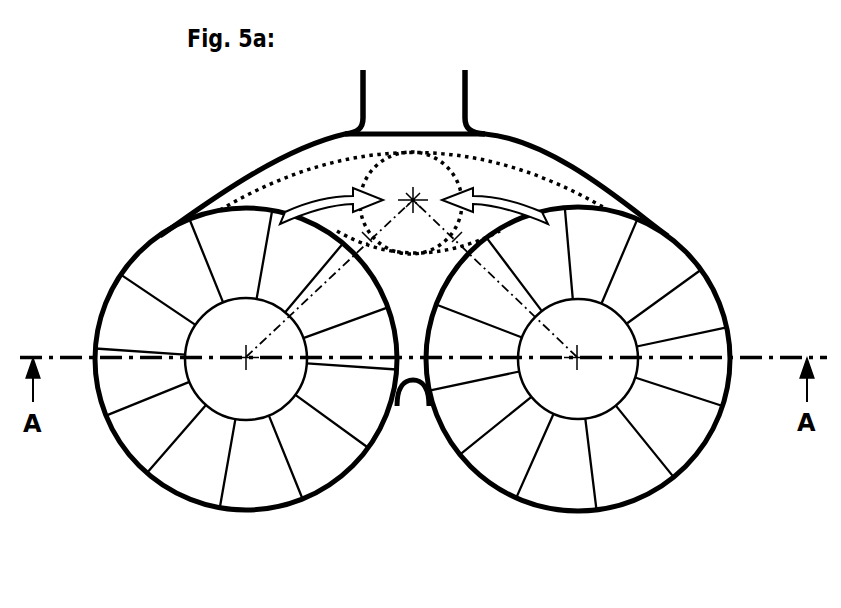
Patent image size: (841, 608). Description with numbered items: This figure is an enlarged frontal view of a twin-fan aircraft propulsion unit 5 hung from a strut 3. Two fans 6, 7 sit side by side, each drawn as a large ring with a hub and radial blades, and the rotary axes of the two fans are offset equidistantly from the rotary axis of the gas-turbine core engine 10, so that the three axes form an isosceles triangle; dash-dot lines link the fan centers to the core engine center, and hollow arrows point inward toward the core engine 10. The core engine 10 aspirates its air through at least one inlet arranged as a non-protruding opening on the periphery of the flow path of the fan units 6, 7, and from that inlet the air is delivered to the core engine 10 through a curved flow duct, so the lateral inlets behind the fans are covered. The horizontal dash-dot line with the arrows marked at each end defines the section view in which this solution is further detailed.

The strut 3 is at (443, 100).
The aircraft propulsion unit 5 is at (410, 427).
The fan 6 is at (183, 502).
The fan 7 is at (613, 508).
The gas-turbine core engine 10 is at (442, 185).